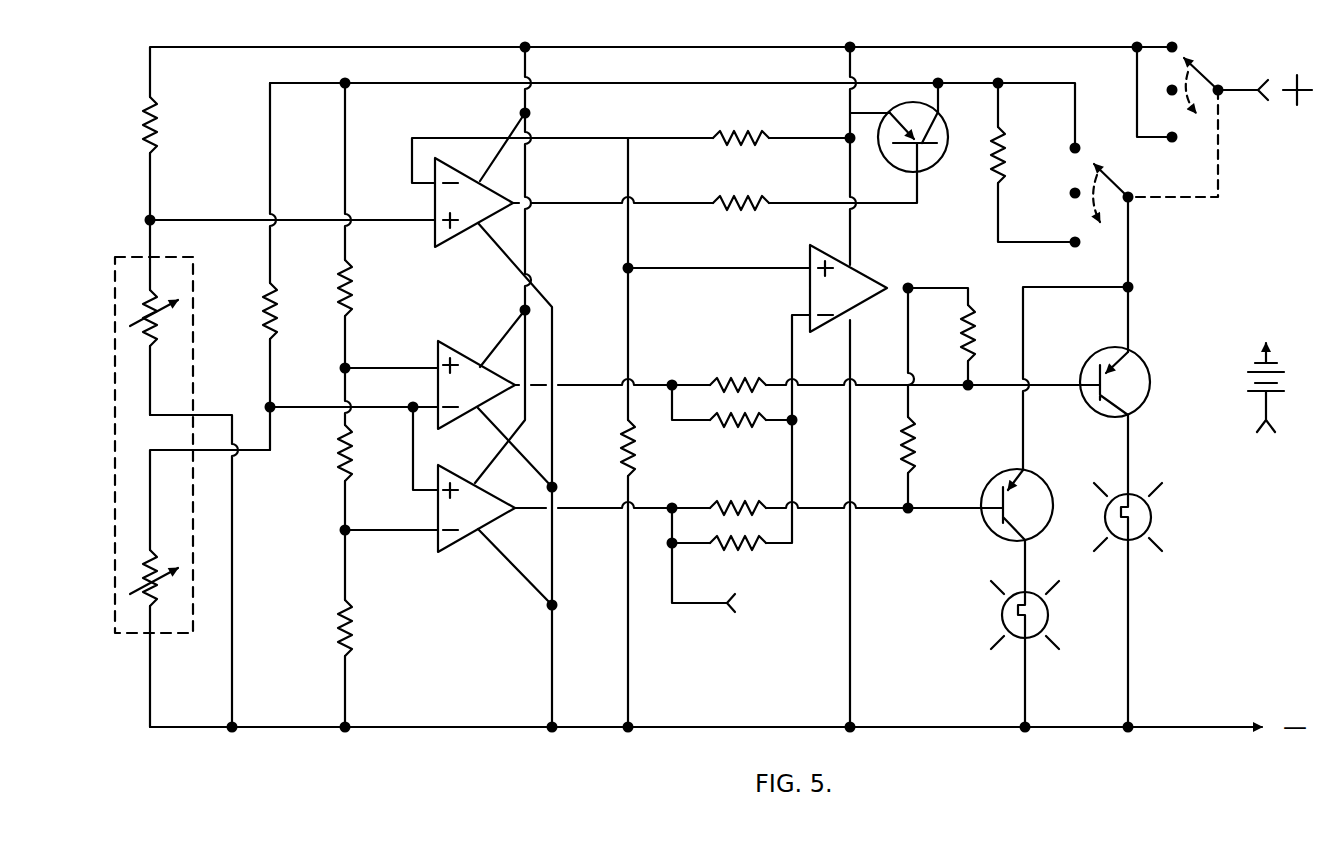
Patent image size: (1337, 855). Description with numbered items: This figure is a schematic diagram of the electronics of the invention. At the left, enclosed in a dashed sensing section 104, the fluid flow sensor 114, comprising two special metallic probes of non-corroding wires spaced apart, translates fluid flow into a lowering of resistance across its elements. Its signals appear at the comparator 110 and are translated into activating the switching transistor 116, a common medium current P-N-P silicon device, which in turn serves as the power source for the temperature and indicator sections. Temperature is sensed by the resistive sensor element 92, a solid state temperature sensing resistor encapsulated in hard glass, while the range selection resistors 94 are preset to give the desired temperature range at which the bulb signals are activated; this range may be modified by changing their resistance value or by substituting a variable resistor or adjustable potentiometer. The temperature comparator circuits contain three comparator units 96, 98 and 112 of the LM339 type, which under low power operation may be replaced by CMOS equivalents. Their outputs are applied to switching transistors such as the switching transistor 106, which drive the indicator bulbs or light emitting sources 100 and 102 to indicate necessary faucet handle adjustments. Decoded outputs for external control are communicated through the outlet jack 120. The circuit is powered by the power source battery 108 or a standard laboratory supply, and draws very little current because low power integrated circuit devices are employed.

The resistive sensor element 92 is at (160, 590).
The range selection resistors 94 is at (327, 608).
The comparator unit 96 is at (463, 362).
The comparator unit 98 is at (462, 482).
The indicator bulb 100 is at (1050, 615).
The indicator bulb 102 is at (1153, 517).
The temperature sensing probe 104 is at (165, 270).
The switching transistor 106 is at (1133, 360).
The power source battery 108 is at (1033, 482).
The comparator 110 is at (458, 232).
The comparator unit 112 is at (866, 274).
The fluid flow sensor 114 is at (157, 328).
The switching transistor 116 is at (925, 160).
The outlet jack 120 is at (740, 600).